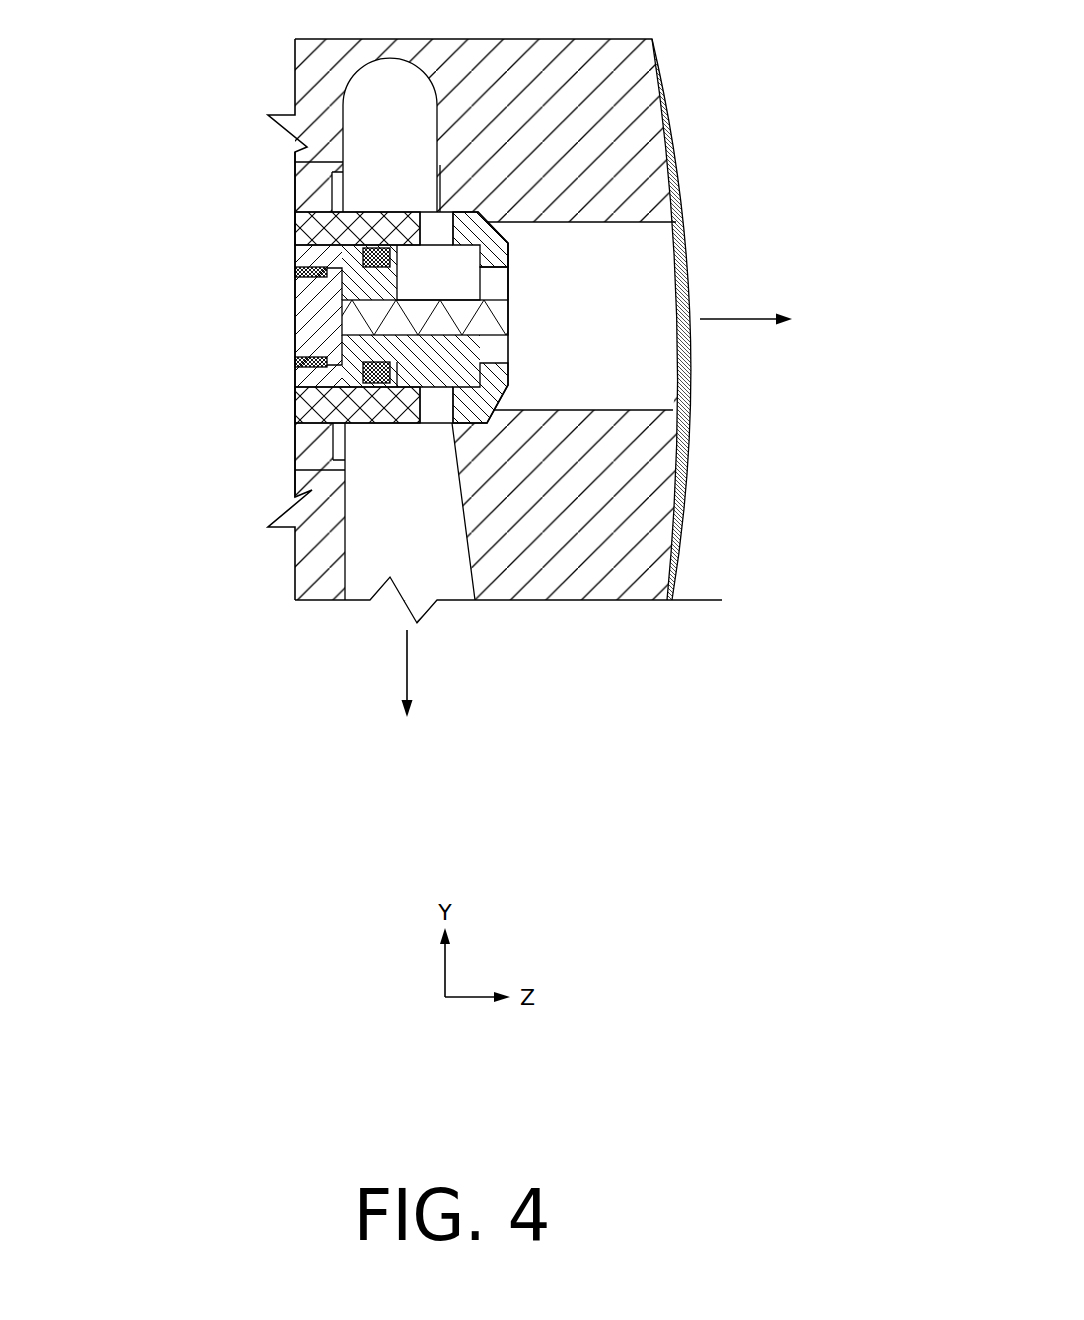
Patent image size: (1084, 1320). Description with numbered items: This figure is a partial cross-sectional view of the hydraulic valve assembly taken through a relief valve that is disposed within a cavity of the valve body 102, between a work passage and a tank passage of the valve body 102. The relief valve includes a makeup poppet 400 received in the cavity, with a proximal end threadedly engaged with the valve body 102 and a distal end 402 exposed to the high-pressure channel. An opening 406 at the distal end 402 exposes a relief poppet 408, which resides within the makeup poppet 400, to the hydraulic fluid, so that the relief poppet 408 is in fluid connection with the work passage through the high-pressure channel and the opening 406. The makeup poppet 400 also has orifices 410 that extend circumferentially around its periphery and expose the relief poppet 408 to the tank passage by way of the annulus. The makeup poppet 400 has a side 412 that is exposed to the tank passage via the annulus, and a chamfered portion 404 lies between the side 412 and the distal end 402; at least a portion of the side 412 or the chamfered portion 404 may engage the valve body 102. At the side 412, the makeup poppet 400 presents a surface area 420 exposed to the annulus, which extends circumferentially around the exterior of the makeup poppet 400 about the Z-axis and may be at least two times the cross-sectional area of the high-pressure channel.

The valve body 102 is at (495, 331).
The makeup poppet 400 is at (280, 422).
The distal end 402 is at (538, 242).
The chamfered portion 404 is at (499, 425).
The opening 406 is at (533, 278).
The relief poppet 408 is at (453, 287).
The orifices 410 is at (453, 220).
The side 412 is at (345, 449).
The surface area 420 is at (358, 210).